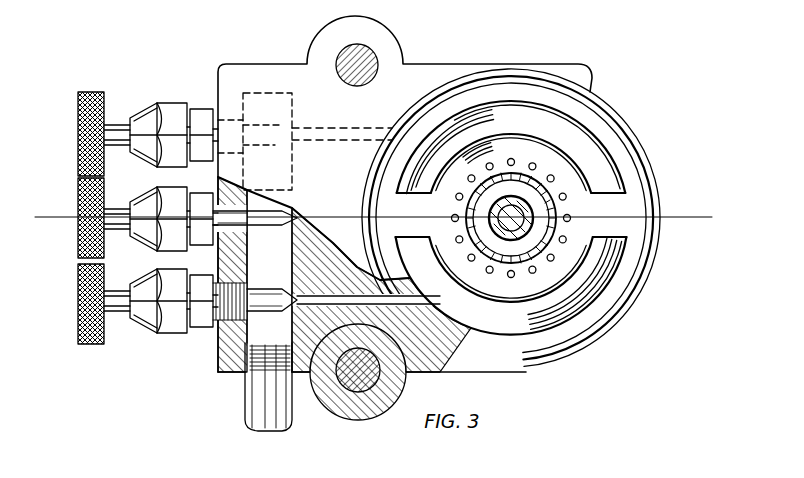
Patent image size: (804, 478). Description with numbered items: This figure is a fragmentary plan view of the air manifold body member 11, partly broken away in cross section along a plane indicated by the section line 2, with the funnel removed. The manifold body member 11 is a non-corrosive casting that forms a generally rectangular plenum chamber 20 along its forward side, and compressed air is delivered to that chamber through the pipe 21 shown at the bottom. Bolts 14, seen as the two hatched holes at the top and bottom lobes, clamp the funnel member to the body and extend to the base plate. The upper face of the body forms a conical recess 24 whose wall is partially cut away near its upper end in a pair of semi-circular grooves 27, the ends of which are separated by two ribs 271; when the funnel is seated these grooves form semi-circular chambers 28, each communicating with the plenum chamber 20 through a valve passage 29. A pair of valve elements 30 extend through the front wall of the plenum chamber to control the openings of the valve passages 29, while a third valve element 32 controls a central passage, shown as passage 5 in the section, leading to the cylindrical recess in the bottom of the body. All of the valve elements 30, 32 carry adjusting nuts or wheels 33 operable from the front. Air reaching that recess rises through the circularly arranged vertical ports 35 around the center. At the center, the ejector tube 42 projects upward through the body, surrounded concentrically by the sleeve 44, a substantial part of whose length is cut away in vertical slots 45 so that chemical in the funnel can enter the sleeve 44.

The section line 2- 2 is at (713, 226).
The bulk container 5 is at (380, 327).
The air manifold body member 11 is at (623, 320).
The bolts 14 is at (363, 387).
The plenum chamber 20 is at (218, 346).
The pipe 21 is at (255, 392).
The conical recess 24 is at (608, 128).
The semi-circular grooves 27 is at (608, 282).
The ribs 271 is at (615, 203).
The semi-circular chambers 28 is at (553, 318).
The valve passage 29 is at (400, 307).
The valve elements 30 is at (268, 292).
The third valve element 32 is at (262, 204).
The adjusting nuts or wheels 33 is at (80, 306).
The vertical ports 35 is at (510, 278).
The ejector tube 42 is at (512, 216).
The sleeve 44 is at (530, 222).
The vertical slots 45 is at (517, 258).